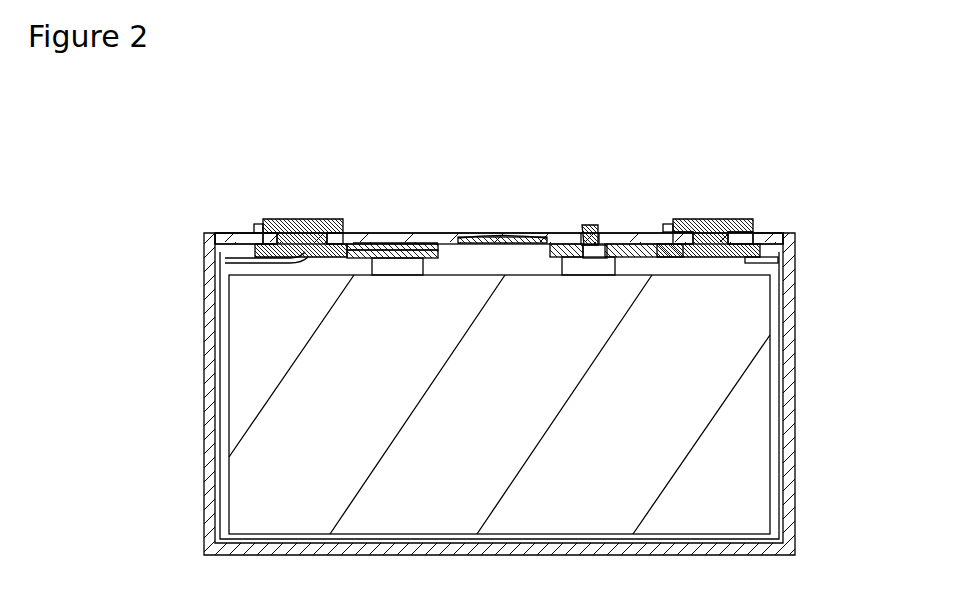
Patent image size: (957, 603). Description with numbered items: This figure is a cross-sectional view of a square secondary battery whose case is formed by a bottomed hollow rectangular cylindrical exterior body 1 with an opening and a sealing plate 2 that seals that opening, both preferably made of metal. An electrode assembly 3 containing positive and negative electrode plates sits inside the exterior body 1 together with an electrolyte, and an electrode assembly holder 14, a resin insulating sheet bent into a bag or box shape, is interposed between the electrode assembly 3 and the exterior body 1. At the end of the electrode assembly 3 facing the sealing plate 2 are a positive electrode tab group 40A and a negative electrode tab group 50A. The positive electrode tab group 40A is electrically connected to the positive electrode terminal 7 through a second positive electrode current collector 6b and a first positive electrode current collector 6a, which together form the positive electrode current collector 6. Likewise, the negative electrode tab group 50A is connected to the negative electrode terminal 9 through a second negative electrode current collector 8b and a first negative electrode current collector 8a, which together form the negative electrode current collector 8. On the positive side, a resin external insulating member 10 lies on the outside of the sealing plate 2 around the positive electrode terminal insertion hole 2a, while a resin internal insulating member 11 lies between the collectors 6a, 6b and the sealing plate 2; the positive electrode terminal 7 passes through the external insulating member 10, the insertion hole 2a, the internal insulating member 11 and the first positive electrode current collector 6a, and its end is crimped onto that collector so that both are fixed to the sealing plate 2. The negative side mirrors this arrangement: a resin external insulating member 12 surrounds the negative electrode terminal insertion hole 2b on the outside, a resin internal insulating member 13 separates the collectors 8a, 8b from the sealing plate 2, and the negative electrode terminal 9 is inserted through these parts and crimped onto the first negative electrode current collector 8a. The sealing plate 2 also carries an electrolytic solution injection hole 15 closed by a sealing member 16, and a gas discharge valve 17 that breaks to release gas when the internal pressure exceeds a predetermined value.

The exterior body 1 is at (790, 412).
The sealing plate 2 is at (530, 190).
The positive electrode terminal insertion hole 2a is at (758, 238).
The negative electrode terminal insertion hole 2b is at (252, 235).
The electrode assembly 3 is at (242, 490).
The positive electrode current collector 6 is at (714, 259).
The first positive electrode current collector 6a is at (760, 257).
The second positive electrode current collector 6b is at (640, 256).
The positive electrode terminal 7 is at (708, 220).
The negative electrode current collector 8 is at (290, 265).
The first negative electrode current collector 8a is at (225, 262).
The second negative electrode current collector 8b is at (373, 248).
The negative electrode terminal 9 is at (298, 218).
The external insulating member 10 is at (755, 234).
The internal insulating member 11 is at (622, 248).
The external insulating member 12 is at (262, 223).
The internal insulating member 13 is at (423, 247).
The electrode assembly holder 14 is at (782, 453).
The electrolytic solution injection hole 15 is at (578, 240).
The sealing member 16 is at (590, 222).
The gas discharge valve 17 is at (498, 232).
The positive electrode tab group 40A is at (582, 257).
The negative electrode tab group 50A is at (400, 245).